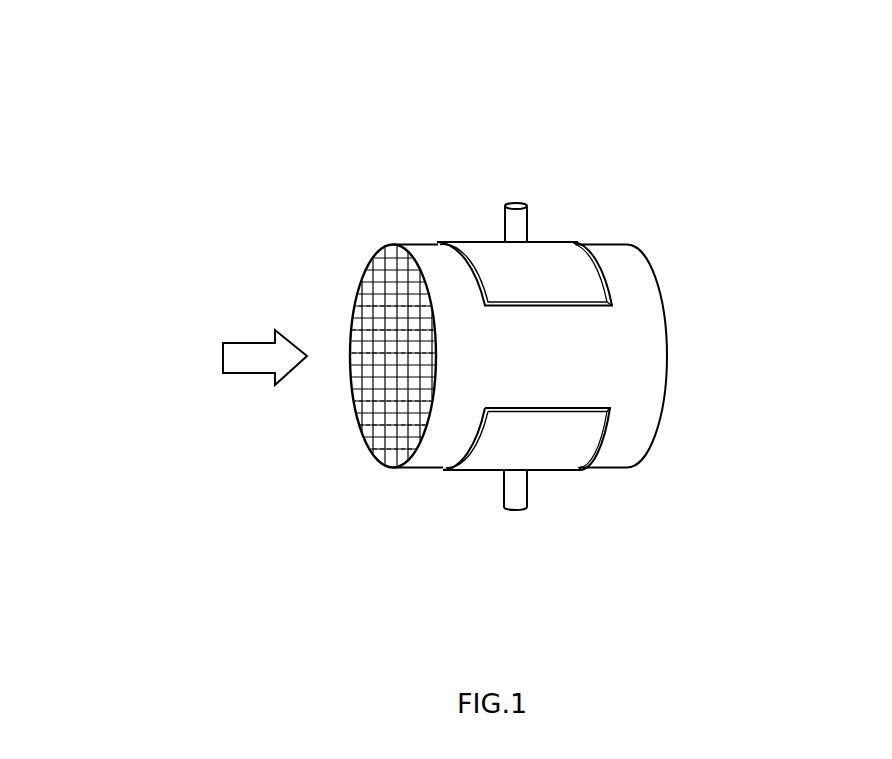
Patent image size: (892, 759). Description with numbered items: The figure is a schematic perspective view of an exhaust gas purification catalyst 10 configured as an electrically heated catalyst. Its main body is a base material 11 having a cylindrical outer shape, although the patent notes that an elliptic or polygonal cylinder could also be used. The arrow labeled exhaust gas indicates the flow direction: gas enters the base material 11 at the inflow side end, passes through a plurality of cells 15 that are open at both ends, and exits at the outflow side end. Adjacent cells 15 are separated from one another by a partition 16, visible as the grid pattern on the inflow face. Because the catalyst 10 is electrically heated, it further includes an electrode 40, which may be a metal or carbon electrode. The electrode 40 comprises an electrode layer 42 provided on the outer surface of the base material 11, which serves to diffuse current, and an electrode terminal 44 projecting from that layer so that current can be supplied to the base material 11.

The exhaust gas purification catalyst 10 is at (211, 102).
The base material 11 is at (418, 243).
The cells 15 is at (383, 365).
The partition 16 is at (397, 413).
The electrode 40 is at (522, 132).
The electrode layer 42 is at (492, 253).
The electrode terminal 44 is at (515, 206).